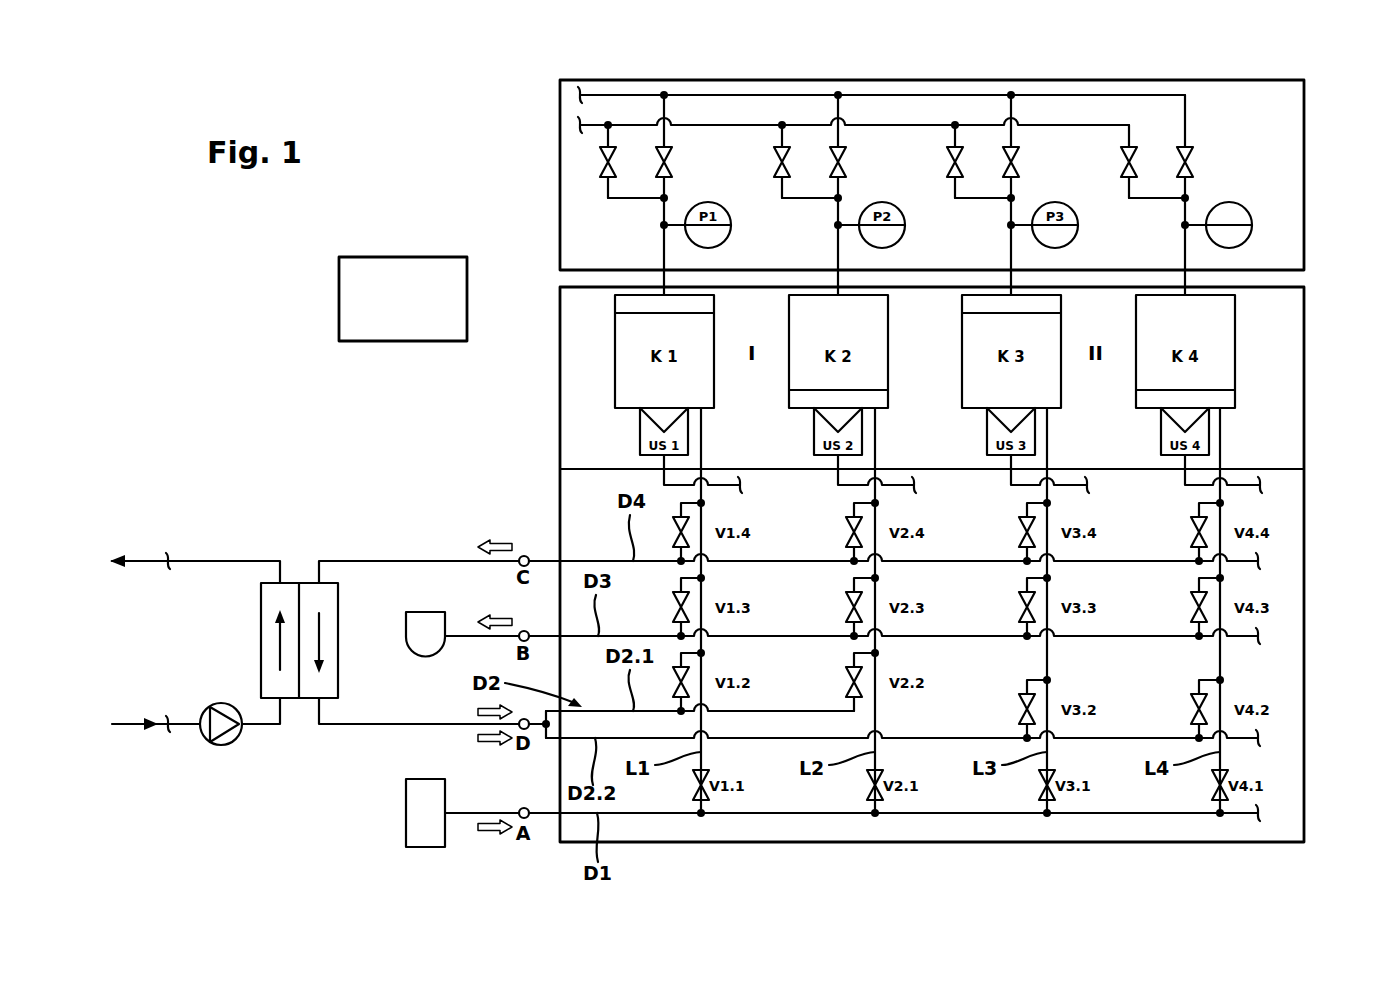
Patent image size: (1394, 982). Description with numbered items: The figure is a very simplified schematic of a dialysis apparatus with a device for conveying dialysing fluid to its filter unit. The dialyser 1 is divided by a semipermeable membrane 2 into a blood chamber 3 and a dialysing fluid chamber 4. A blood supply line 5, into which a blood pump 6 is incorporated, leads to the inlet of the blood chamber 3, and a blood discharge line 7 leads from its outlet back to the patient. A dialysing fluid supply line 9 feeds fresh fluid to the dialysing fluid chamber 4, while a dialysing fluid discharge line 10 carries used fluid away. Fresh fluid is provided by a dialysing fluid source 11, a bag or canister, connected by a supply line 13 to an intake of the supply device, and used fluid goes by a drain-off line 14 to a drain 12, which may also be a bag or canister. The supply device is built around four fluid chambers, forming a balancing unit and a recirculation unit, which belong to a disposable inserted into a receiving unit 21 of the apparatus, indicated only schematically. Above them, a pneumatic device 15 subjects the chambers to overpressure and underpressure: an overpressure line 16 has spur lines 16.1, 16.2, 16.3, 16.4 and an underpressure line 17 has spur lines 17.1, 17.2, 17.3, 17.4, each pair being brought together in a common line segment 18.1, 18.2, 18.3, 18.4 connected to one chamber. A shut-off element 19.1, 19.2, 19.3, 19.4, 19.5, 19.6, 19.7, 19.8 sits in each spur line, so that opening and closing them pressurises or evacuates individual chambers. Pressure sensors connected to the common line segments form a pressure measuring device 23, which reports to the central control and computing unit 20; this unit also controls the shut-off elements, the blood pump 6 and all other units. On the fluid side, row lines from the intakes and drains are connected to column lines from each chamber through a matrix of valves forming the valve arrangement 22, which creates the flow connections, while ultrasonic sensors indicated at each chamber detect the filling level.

The dialyser 1 is at (303, 576).
The semipermeable membrane 2 is at (300, 600).
The blood chamber 3 is at (270, 640).
The dialysing fluid chamber 4 is at (330, 640).
The blood supply line 5 is at (262, 724).
The blood pump 6 is at (228, 742).
The blood discharge line 7 is at (225, 561).
The dialysing fluid supply line 9 is at (378, 561).
The dialysing fluid discharge line 10 is at (378, 724).
The dialysing fluid source 11 is at (415, 828).
The drain 12 is at (425, 645).
The supply line 13 is at (470, 812).
The drain-off line 14 is at (465, 636).
The pneumatic device 15 is at (1304, 132).
The pressure line 16 is at (717, 95).
The pressure line 17 is at (732, 125).
The spur line 16.1 is at (667, 133).
The spur line 16.2 is at (841, 133).
The spur line 16.3 is at (1014, 133).
The spur line 16.4 is at (1188, 133).
The spur line 17.1 is at (636, 198).
The spur line 17.2 is at (810, 198).
The spur line 17.3 is at (983, 198).
The spur line 17.4 is at (1157, 198).
The common line segment 18.1 is at (665, 258).
The common line segment 18.2 is at (839, 258).
The common line segment 18.3 is at (1012, 258).
The common line segment 18.4 is at (1186, 258).
The shut-off element 19.1 is at (600, 165).
The shut-off element 19.2 is at (670, 165).
The shut-off element 19.3 is at (774, 165).
The shut-off element 19.4 is at (844, 165).
The shut-off element 19.5 is at (947, 165).
The shut-off element 19.6 is at (1017, 165).
The shut-off element 19.7 is at (1121, 165).
The shut-off element 19.8 is at (1191, 165).
The central control and computing unit 20 is at (402, 322).
The receiving unit 21 is at (1304, 369).
The valve arrangement 22 is at (1304, 689).
The pressure measuring device 23 is at (1248, 216).